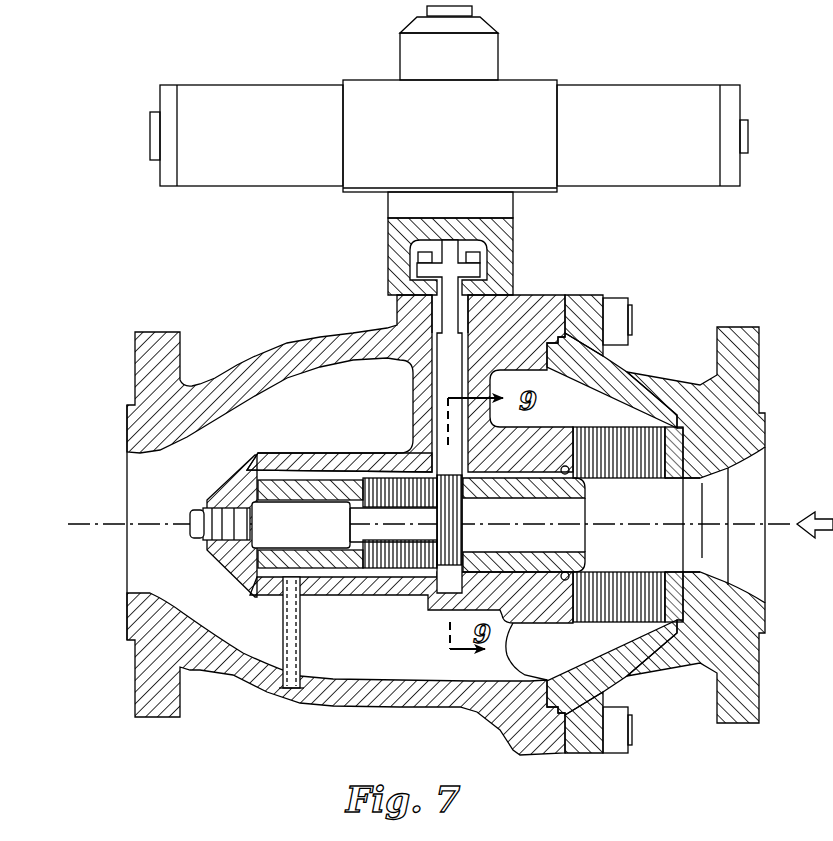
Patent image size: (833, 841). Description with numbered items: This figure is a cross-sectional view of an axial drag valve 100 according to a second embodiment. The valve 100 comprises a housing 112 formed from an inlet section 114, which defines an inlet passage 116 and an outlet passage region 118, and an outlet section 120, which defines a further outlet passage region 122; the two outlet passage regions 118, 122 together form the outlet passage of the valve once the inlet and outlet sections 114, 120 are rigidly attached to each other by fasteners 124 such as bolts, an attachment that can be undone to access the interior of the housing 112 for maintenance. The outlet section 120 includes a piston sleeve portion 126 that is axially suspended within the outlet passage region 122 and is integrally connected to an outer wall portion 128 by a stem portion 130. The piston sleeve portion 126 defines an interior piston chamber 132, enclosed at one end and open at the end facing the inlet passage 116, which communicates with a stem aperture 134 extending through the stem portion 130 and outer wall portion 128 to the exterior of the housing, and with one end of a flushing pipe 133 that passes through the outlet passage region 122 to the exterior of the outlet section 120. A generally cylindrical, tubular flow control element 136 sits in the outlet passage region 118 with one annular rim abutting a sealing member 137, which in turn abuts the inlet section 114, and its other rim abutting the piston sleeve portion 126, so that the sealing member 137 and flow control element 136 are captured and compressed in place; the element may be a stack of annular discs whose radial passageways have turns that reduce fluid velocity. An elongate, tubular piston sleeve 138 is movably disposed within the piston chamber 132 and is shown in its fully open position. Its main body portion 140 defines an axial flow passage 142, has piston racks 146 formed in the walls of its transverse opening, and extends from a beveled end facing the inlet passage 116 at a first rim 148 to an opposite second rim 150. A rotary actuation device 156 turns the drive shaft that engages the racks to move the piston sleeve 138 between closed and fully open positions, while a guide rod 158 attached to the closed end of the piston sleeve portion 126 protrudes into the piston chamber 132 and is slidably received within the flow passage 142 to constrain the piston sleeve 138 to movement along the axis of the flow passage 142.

The valve 100 is at (436, 492).
The housing 112 is at (131, 405).
The inlet section 114 is at (745, 382).
The inlet passage 116 is at (750, 483).
The outlet passage region 118 is at (642, 403).
The outlet section 120 is at (265, 345).
The outlet passage region 122 is at (337, 383).
The fasteners 124 is at (613, 301).
The piston sleeve portion 126 is at (322, 463).
The outer wall portion 128 is at (243, 673).
The stem portion 130 is at (410, 423).
The piston chamber 132 is at (367, 572).
The flushing pipe 133 is at (283, 648).
The stem aperture 134 is at (430, 427).
The flow control element 136 is at (636, 632).
The sealing member 137 is at (683, 578).
The piston sleeve 138 is at (593, 503).
The main body portion 140 is at (253, 465).
The flow passage 142 is at (605, 545).
The piston rack 146 is at (420, 507).
The first rim 148 is at (585, 490).
The second rim 150 is at (233, 570).
The rotary actuation device 156 is at (517, 66).
The guide rod 158 is at (260, 513).